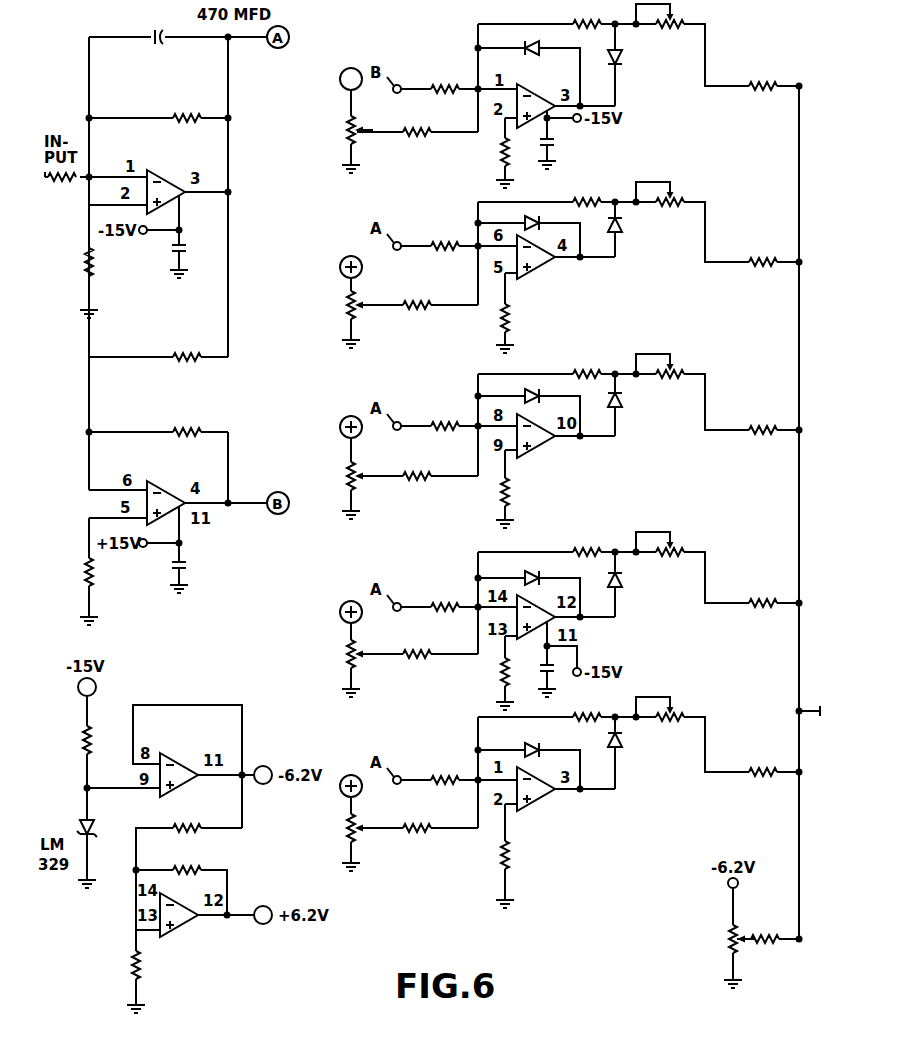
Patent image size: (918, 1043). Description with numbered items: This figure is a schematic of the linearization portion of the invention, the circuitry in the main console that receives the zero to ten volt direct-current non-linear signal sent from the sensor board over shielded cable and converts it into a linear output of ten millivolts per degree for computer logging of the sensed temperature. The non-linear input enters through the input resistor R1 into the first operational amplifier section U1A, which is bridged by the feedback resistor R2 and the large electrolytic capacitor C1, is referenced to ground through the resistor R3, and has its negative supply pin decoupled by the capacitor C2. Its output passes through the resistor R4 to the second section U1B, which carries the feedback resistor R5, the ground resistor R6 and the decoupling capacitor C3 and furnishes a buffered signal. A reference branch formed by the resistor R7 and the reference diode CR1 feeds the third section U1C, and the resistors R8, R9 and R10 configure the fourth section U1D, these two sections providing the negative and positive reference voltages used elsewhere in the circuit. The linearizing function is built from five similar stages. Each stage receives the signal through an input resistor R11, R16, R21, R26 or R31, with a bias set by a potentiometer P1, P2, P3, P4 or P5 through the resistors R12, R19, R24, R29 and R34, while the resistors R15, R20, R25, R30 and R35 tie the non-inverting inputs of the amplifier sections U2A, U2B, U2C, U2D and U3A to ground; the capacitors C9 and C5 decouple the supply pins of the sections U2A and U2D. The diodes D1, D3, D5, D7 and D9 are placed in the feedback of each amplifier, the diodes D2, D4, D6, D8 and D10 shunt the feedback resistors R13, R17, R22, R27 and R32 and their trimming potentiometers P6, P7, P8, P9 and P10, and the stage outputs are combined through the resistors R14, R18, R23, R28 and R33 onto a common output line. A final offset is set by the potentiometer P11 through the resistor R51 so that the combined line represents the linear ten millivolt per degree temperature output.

The 470 MFD coupling capacitor C1 is at (153, 25).
The input resistor R1 is at (62, 187).
The feedback resistor R2 is at (187, 107).
The resistor R3 is at (73, 262).
The resistor R4 is at (187, 346).
The feedback resistor R5 is at (187, 421).
The resistor R6 is at (73, 572).
The resistor R7 is at (68, 740).
The resistor R8 is at (187, 818).
The resistor R9 is at (187, 859).
The resistor R10 is at (117, 965).
The bypass capacitor C2 is at (193, 247).
The bypass capacitor C3 is at (193, 565).
The bypass capacitor C5 is at (535, 660).
The bypass capacitor C9 is at (561, 141).
The operational amplifier RC4136TK section A U1A is at (178, 173).
The operational amplifier RC4136TK section B U1B is at (178, 483).
The operational amplifier RC4136TK section C U1C is at (191, 753).
The operational amplifier RC4136TK section D U1D is at (235, 886).
The LM329 voltage reference zener diode CR1 is at (70, 814).
The potentiometer P1 is at (346, 106).
The potentiometer P2 is at (346, 287).
The potentiometer P3 is at (346, 453).
The potentiometer P4 is at (346, 634).
The potentiometer P5 is at (346, 808).
The potentiometer P6 is at (670, 14).
The potentiometer P7 is at (670, 190).
The potentiometer P8 is at (670, 362).
The potentiometer P9 is at (670, 540).
The potentiometer P10 is at (675, 706).
The potentiometer P11 is at (725, 939).
The resistor R11 is at (444, 78).
The resistor R12 is at (419, 121).
The resistor R13 is at (589, 14).
The summing resistor R14 is at (764, 75).
The resistor R15 is at (487, 152).
The resistor R16 is at (444, 236).
The resistor R17 is at (589, 191).
The summing resistor R18 is at (764, 251).
The resistor R19 is at (419, 294).
The resistor R20 is at (525, 318).
The resistor R21 is at (444, 416).
The resistor R22 is at (589, 363).
The summing resistor R23 is at (764, 420).
The resistor R24 is at (419, 465).
The resistor R25 is at (525, 492).
The resistor R26 is at (444, 597).
The resistor R27 is at (589, 541).
The summing resistor R28 is at (764, 592).
The resistor R29 is at (419, 643).
The resistor R30 is at (488, 672).
The resistor R31 is at (444, 770).
The resistor R32 is at (589, 706).
The summing resistor R33 is at (764, 761).
The resistor R34 is at (419, 817).
The resistor R35 is at (525, 855).
The resistor R51 is at (767, 929).
The diode D1 is at (524, 40).
The diode D2 is at (630, 59).
The diode D3 is at (524, 215).
The diode D4 is at (630, 230).
The diode D5 is at (524, 388).
The diode D6 is at (630, 404).
The diode D7 is at (524, 570).
The diode D8 is at (630, 582).
The diode D9 is at (524, 742).
The diode D10 is at (637, 744).
The operational amplifier RC4136TK section A U2A is at (526, 93).
The operational amplifier RC4136TK section B U2B is at (578, 269).
The operational amplifier RC4136TK section C U2C is at (575, 448).
The operational amplifier RC4136TK section D U2D is at (597, 630).
The operational amplifier RC4136TK section A U3A is at (575, 801).